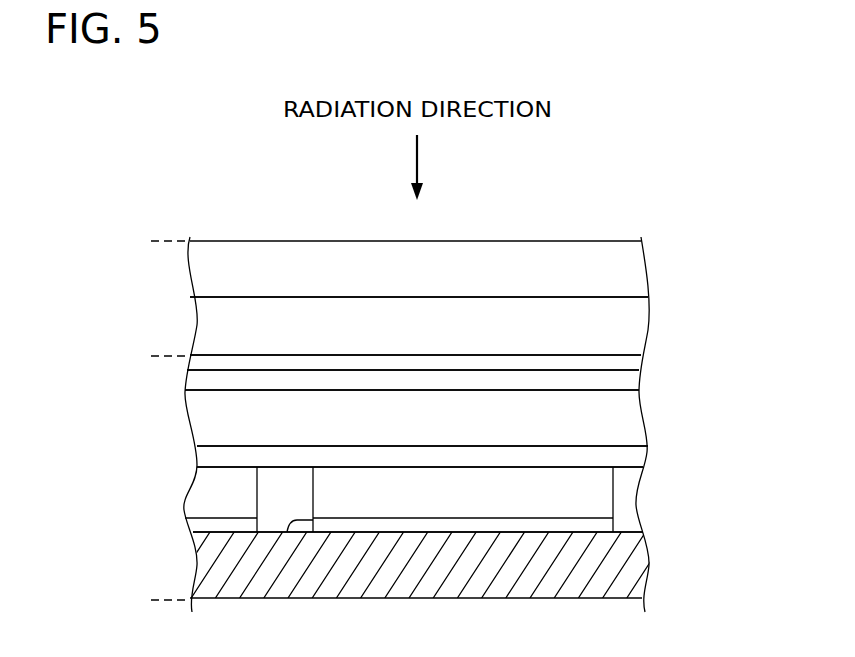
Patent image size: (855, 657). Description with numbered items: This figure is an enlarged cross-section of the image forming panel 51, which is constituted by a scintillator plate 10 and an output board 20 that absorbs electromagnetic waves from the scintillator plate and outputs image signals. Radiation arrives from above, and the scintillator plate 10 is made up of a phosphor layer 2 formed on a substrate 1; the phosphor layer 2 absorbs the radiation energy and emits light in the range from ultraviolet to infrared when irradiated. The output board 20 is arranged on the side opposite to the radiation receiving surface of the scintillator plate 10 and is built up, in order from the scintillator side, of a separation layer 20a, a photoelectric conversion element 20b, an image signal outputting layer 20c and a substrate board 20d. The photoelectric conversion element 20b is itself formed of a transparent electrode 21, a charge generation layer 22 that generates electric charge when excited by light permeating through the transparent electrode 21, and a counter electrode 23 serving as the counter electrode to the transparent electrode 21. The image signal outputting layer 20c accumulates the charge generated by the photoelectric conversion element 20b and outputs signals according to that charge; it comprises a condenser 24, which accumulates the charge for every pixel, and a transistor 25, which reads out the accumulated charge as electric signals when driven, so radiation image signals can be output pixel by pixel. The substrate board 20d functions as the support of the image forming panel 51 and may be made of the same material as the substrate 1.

The image forming panel 51 is at (548, 218).
The substrate 1 is at (622, 262).
The phosphor layer 2 is at (630, 317).
The scintillator plate 10 is at (154, 242).
The output board 20 is at (154, 358).
The separation layer 20a is at (642, 358).
The photoelectric conversion element 20b is at (704, 360).
The image signal outputting layer 20c is at (627, 498).
The substrate board 20d is at (632, 565).
The transparent electrode 21 is at (627, 380).
The charge generation layer 22 is at (627, 416).
The counter electrode 23 is at (638, 453).
The condenser 24 is at (223, 527).
The transistor 25 is at (299, 522).